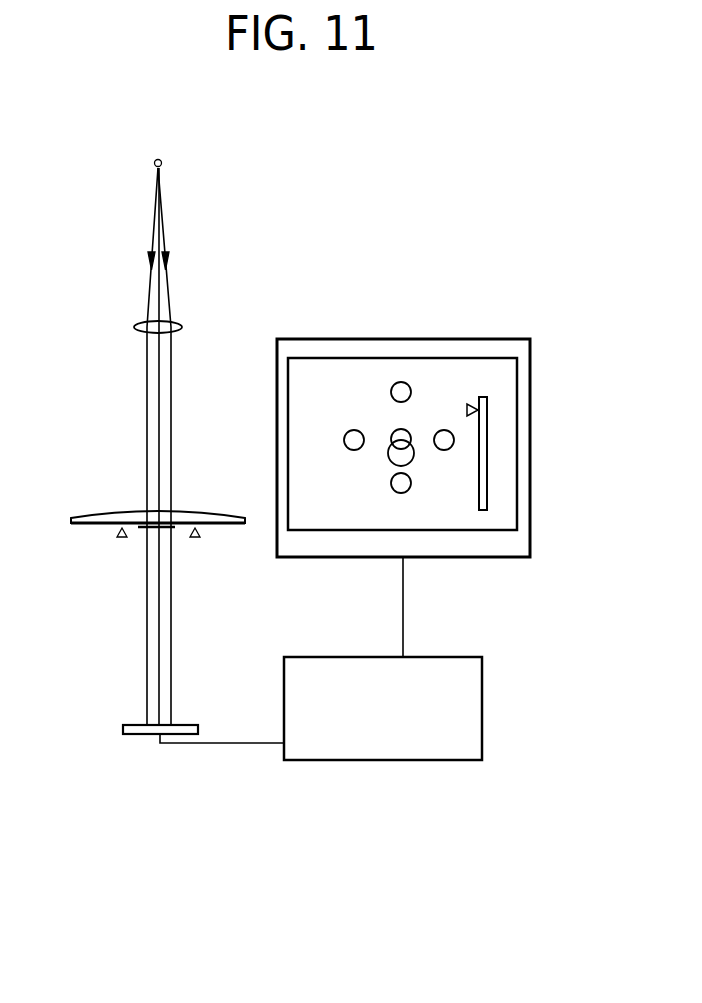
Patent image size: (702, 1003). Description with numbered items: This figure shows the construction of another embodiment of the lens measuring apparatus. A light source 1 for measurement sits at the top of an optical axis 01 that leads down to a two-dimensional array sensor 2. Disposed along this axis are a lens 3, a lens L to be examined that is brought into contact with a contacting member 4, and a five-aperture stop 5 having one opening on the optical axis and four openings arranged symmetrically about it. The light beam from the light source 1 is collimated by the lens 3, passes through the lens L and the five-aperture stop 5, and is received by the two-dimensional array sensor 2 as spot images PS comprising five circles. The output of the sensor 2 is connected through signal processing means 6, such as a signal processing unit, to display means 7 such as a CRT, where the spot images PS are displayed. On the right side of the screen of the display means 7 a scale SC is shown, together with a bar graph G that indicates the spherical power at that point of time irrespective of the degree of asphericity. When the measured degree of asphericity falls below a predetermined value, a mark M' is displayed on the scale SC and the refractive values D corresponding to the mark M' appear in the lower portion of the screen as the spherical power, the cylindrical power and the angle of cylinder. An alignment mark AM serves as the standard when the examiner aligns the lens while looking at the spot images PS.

The light source for measurement 1 is at (154, 162).
The two-dimensional array sensor 2 is at (130, 723).
The lens 3 is at (133, 328).
The contacting member 4 is at (115, 531).
The five-aperture stop 5 is at (149, 529).
The signal processing means 6 is at (355, 761).
The display means 7 is at (328, 346).
The optical axis 01 is at (175, 425).
The lens to be examined L is at (90, 513).
The spot images PS is at (400, 382).
The mark M' is at (466, 351).
The bar graph G is at (503, 413).
The scale SC is at (503, 413).
The alignment mark AM is at (388, 463).
The refractive values D is at (390, 515).